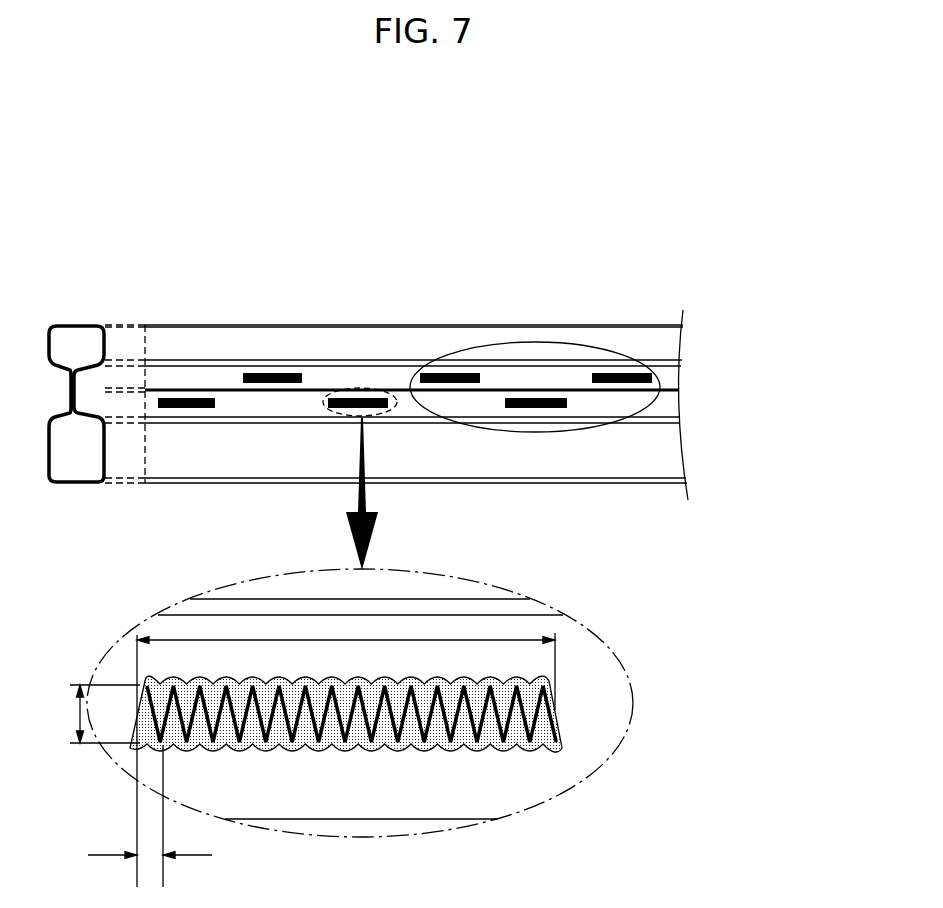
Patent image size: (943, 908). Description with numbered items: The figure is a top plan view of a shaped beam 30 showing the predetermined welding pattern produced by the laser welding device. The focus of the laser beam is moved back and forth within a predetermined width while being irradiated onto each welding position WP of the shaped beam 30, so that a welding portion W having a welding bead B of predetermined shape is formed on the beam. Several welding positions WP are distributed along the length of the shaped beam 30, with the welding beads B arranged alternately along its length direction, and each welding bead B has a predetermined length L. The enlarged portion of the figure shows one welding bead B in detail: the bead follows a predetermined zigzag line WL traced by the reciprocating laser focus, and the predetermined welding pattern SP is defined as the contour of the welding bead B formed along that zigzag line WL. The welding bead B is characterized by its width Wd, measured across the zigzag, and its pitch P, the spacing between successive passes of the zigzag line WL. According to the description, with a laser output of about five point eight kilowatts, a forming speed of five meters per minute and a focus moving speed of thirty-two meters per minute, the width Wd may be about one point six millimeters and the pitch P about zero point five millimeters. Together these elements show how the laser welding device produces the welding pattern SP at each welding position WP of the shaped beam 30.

The shaped beam 30 is at (432, 347).
The welding portion W is at (660, 399).
The welding position WP is at (208, 396).
The welding bead B is at (334, 409).
The length of welding bead L is at (346, 747).
The width of welding bead Wd is at (92, 714).
The pitch of welding bead P is at (150, 820).
The zigzag line WL is at (310, 737).
The welding pattern SP is at (357, 747).